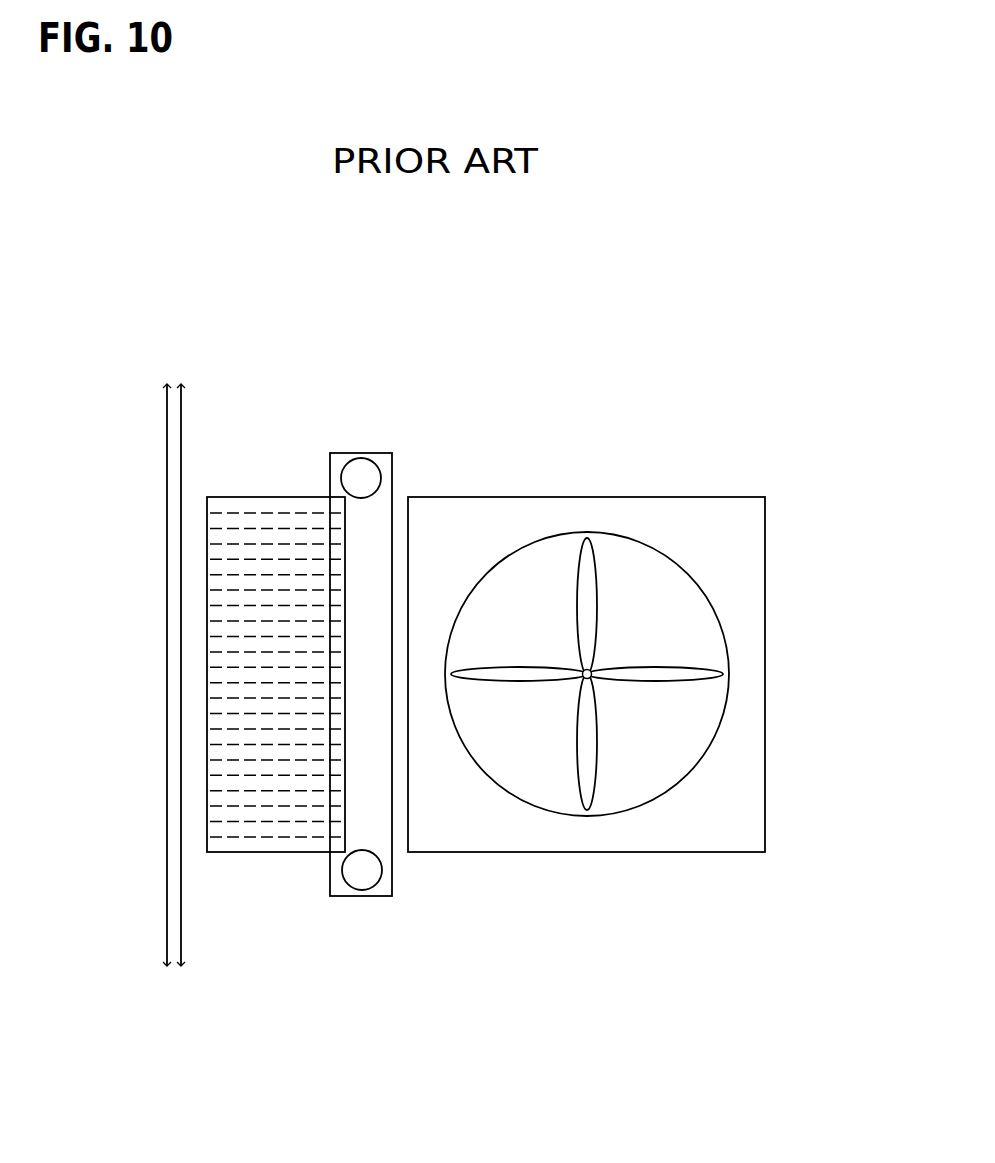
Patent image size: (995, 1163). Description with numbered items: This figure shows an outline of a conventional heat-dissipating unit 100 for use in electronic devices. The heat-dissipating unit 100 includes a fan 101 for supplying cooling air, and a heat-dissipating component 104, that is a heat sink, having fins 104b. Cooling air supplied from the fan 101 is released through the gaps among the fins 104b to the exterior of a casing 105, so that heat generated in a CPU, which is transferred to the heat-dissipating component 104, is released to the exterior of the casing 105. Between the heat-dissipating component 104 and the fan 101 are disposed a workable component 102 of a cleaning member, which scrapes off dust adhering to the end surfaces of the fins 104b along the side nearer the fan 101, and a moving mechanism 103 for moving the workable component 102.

The heat-dissipating unit 100 is at (634, 354).
The fan 101 is at (717, 512).
The workable component 102 is at (383, 452).
The moving mechanism 103 is at (361, 467).
The heat-dissipating component 104 is at (228, 497).
The fins 104b is at (288, 513).
The casing 105 is at (167, 669).